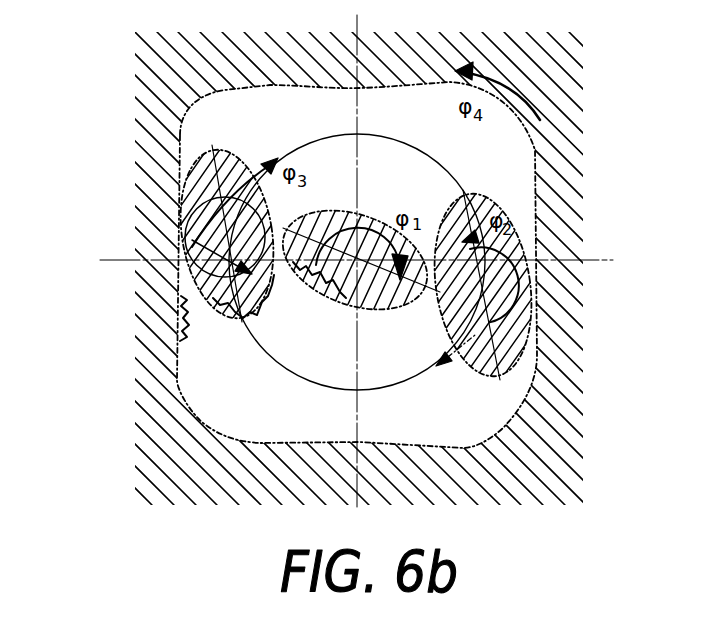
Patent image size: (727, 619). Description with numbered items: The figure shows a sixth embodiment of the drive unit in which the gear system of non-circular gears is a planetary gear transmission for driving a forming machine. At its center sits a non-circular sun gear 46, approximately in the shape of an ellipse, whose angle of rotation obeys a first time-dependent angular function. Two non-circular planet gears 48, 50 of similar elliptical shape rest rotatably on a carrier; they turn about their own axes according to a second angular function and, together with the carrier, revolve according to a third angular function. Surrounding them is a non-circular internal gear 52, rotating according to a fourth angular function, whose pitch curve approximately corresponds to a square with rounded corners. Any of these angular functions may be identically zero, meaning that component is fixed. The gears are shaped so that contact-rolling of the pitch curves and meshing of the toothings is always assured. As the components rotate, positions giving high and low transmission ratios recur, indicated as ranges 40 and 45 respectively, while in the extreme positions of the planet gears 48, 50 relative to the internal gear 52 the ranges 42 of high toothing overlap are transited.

The range of high transmission ratio 40 is at (367, 215).
The range of high toothing overlap 42 is at (207, 97).
The range of low transmission ratio 45 is at (287, 262).
The non-circular sun gear 46 is at (383, 315).
The non-circular planet gear 48 is at (546, 372).
The non-circular planet gear 50 is at (203, 172).
The non-circular internal gear 52 is at (167, 365).